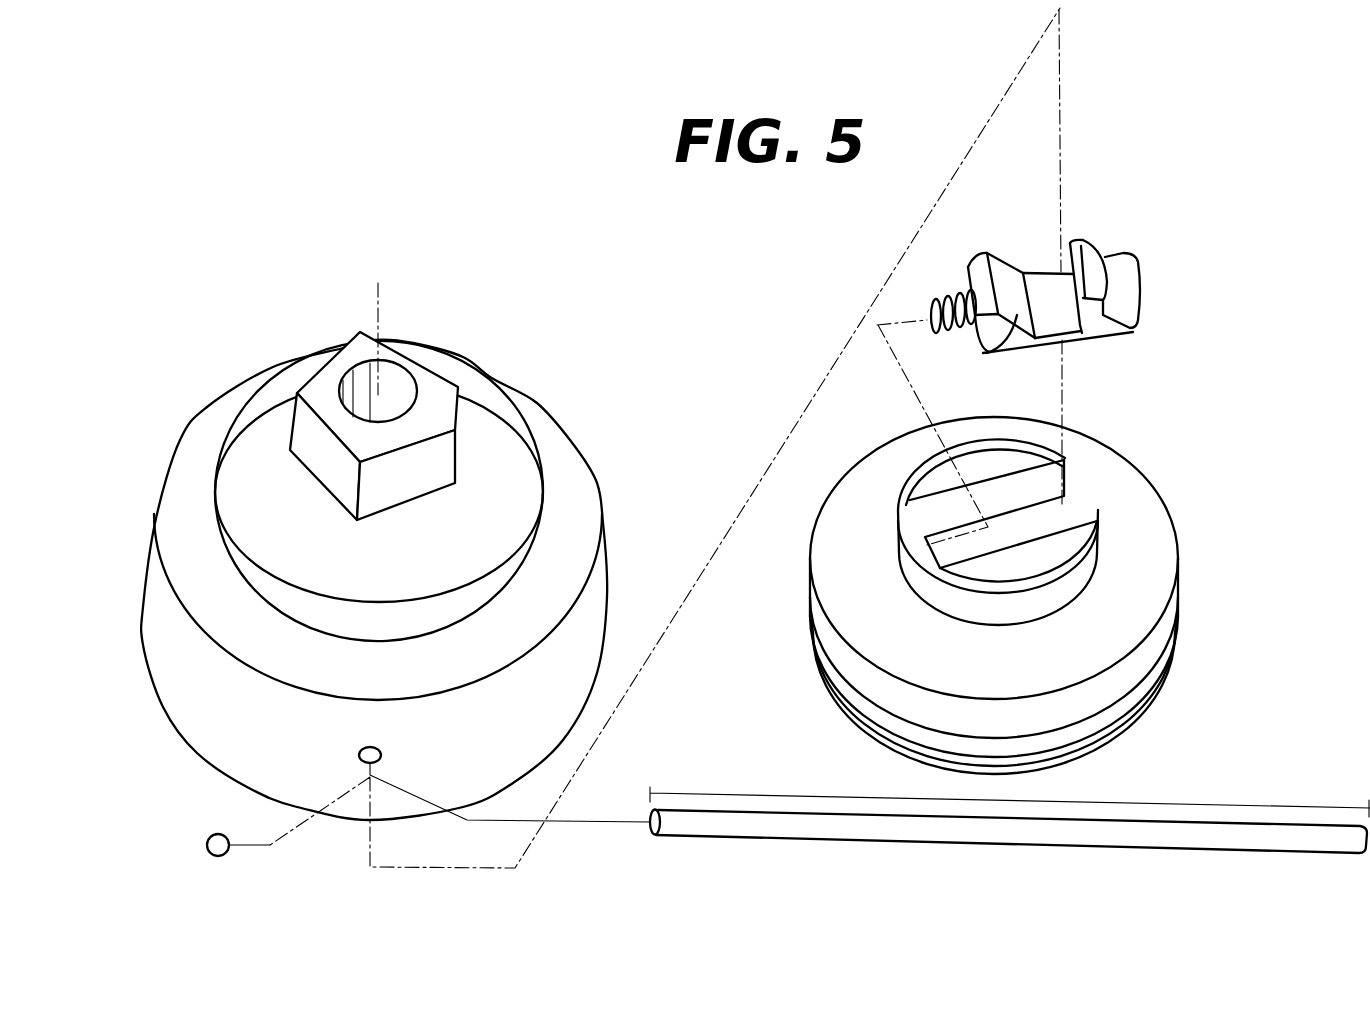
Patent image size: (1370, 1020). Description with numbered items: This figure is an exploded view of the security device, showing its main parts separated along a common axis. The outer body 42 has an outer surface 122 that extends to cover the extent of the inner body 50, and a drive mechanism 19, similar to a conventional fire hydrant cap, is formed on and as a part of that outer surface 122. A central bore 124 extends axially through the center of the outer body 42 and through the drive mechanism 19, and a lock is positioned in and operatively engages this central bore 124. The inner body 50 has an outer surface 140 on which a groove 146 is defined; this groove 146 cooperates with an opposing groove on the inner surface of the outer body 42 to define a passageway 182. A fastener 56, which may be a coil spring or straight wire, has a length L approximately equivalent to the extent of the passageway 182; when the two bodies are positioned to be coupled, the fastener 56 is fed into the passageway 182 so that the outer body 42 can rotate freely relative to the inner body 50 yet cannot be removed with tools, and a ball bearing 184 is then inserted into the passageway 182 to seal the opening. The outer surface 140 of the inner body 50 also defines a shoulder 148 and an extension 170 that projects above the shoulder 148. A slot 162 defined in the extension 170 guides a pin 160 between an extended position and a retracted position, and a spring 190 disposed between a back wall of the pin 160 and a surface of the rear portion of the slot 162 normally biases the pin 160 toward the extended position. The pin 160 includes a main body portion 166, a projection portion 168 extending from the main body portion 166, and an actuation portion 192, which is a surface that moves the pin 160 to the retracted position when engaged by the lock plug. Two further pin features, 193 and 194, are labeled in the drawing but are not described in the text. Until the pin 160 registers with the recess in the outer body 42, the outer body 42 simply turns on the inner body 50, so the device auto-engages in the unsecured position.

The outer body 42 is at (353, 551).
The outer surface 122 is at (203, 699).
The drive mechanism 19 is at (457, 400).
The central bore 124 is at (393, 370).
The passageway 182 is at (383, 757).
The ball bearing 184 is at (212, 840).
The fastener 56 is at (1057, 843).
The length L is at (1234, 807).
The inner body 50 is at (1003, 579).
The shoulder 148 is at (830, 524).
The outer surface 140 is at (1181, 578).
The groove 146 is at (1070, 723).
The extension 170 is at (1022, 612).
The slot 162 is at (1045, 478).
The spring 190 is at (957, 298).
The main body portion 166 is at (1032, 252).
The actuation portion 192 is at (1008, 268).
The ramp surface 193 is at (1017, 316).
The follower face 194 is at (1043, 283).
The pin 160 is at (1152, 266).
The projection portion 168 is at (1132, 290).